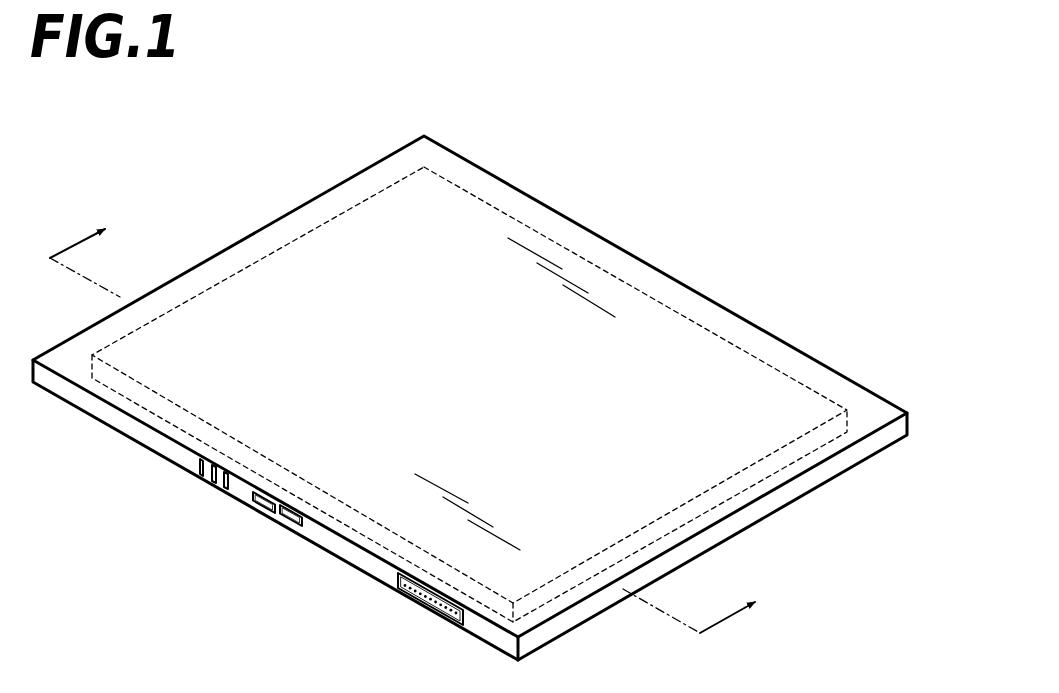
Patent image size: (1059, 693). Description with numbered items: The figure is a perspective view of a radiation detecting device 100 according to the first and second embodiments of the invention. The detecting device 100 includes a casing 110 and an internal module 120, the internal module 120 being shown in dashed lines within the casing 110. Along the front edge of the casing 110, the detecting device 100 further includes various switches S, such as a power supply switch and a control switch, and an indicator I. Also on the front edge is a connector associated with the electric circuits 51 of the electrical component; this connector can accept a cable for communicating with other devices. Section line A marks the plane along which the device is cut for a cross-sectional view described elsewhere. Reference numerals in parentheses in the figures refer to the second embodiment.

The display device 100 is at (470, 383).
The housing 110 is at (553, 219).
The display panel 120 is at (268, 245).
The input/output ports I is at (225, 487).
The slots S is at (297, 521).
The connector 51 is at (407, 595).
The section line A- A is at (394, 443).